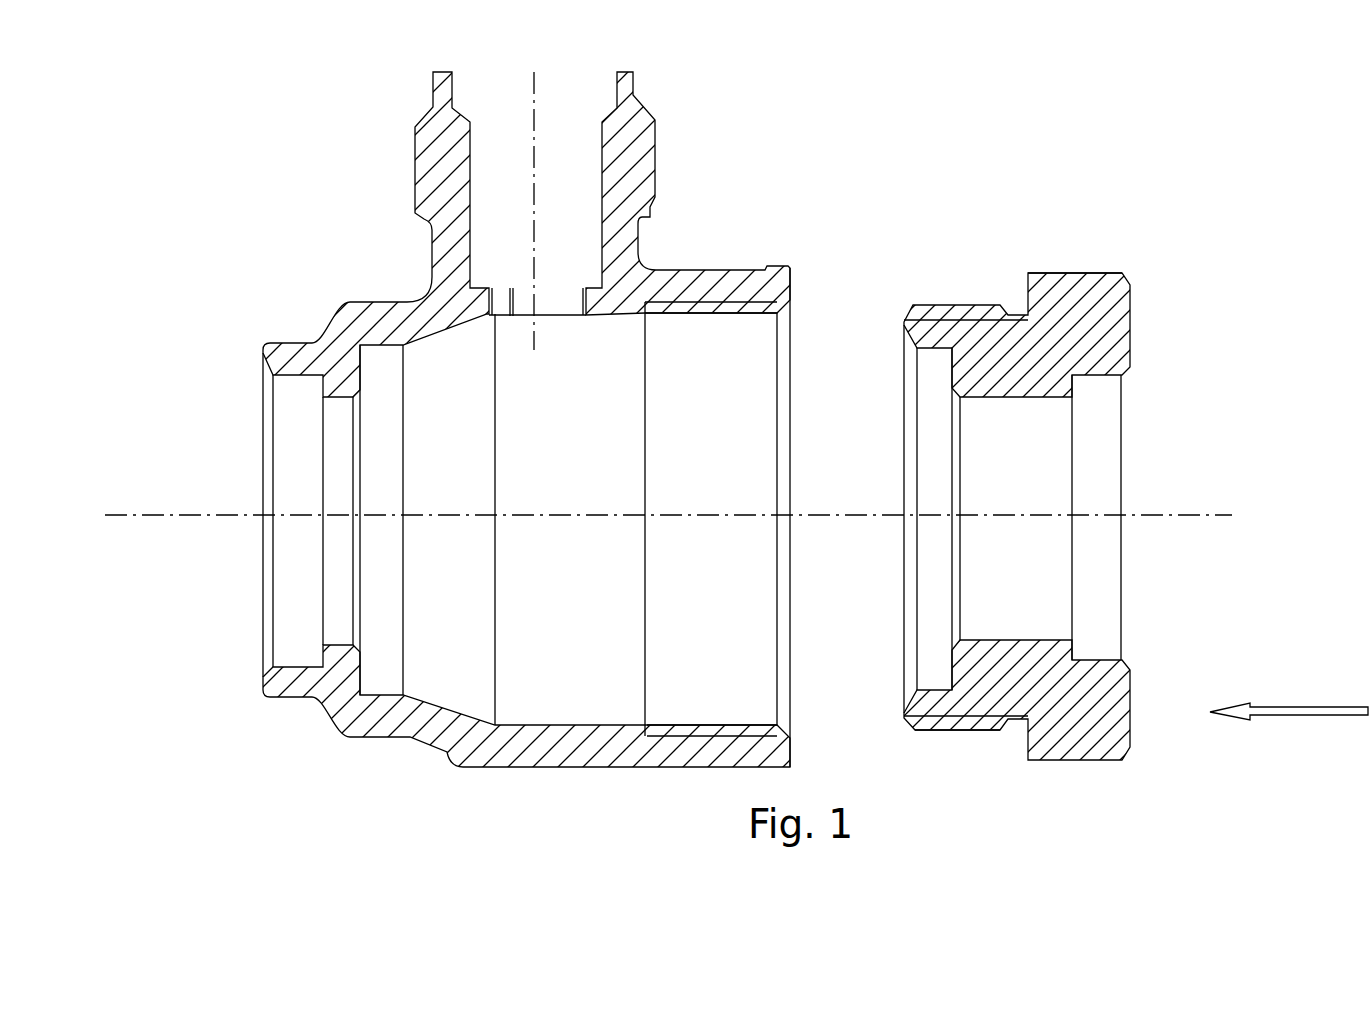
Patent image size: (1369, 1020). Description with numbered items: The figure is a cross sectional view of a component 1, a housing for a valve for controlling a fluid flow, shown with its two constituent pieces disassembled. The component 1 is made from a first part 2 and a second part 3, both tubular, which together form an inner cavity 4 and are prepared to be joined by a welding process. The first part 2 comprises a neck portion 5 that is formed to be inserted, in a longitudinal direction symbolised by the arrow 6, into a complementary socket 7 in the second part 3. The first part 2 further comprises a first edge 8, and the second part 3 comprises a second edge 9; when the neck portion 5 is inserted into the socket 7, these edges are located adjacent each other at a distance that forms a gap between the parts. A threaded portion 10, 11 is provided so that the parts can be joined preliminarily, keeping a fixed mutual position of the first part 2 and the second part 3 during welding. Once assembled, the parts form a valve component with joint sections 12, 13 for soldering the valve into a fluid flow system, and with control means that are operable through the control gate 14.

The component 1 is at (1255, 113).
The first part 2 is at (1058, 233).
The second part 3 is at (728, 202).
The inner cavity 4 is at (572, 673).
The neck portion 5 is at (984, 348).
The arrow 6 is at (1289, 693).
The socket 7 is at (723, 295).
The first edge 8 is at (1023, 285).
The second edge 9 is at (795, 280).
The threaded portion 10 is at (965, 723).
The threaded portion 11 is at (693, 722).
The joint section 12 is at (1110, 383).
The joint section 13 is at (290, 377).
The control gate 14 is at (490, 173).